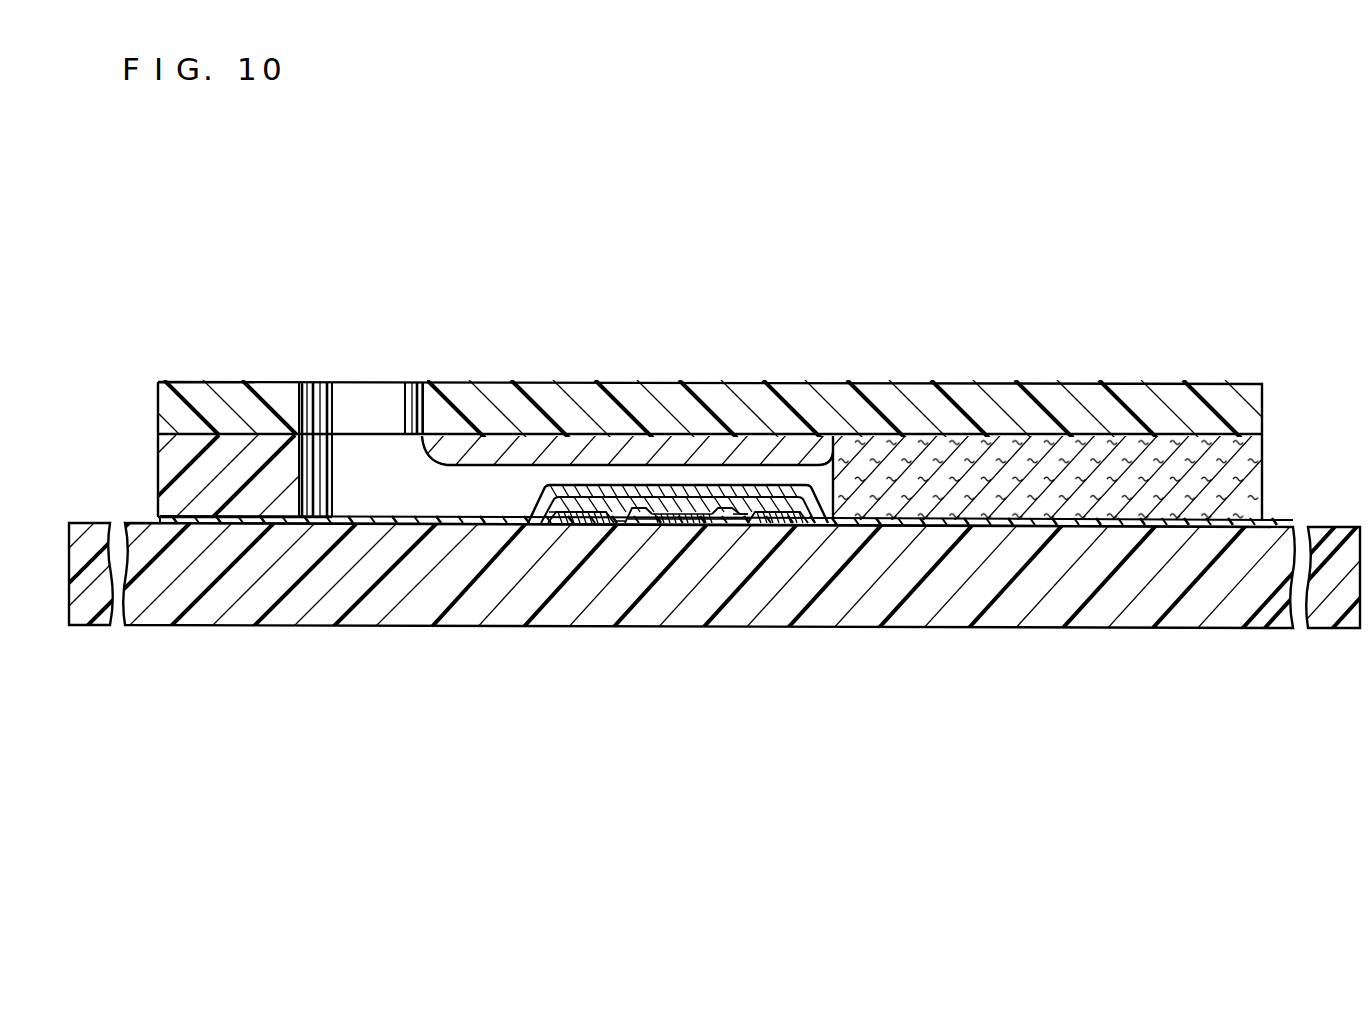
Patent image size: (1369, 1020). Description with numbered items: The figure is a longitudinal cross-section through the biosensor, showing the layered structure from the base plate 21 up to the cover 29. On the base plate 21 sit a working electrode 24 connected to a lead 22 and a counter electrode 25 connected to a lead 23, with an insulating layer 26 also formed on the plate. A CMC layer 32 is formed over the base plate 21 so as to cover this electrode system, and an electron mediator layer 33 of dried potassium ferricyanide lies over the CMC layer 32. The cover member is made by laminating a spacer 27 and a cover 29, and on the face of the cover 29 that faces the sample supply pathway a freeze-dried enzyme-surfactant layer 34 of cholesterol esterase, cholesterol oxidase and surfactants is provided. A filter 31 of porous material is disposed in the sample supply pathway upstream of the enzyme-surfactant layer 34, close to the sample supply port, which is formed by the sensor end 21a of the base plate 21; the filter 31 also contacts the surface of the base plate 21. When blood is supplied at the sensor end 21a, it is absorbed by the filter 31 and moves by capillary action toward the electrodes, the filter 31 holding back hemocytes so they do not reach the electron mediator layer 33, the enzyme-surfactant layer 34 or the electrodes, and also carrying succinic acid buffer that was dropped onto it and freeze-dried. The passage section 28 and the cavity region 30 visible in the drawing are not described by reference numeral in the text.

The base plate 21 is at (212, 602).
The sensor end 21a is at (1282, 522).
The lead 22 is at (680, 527).
The lead 23 is at (572, 527).
The working electrode 24 is at (657, 527).
The counter electrode 25 is at (600, 527).
The insulating layer 26 is at (460, 520).
The spacer 27 is at (175, 465).
The via conductor 28 is at (343, 485).
The cover 29 is at (206, 407).
The opening 30 is at (373, 418).
The filter 31 is at (1237, 455).
The CMC layer 32 is at (597, 507).
The electron mediator layer 33 is at (573, 492).
The enzyme-surfactant layer 34 is at (493, 452).